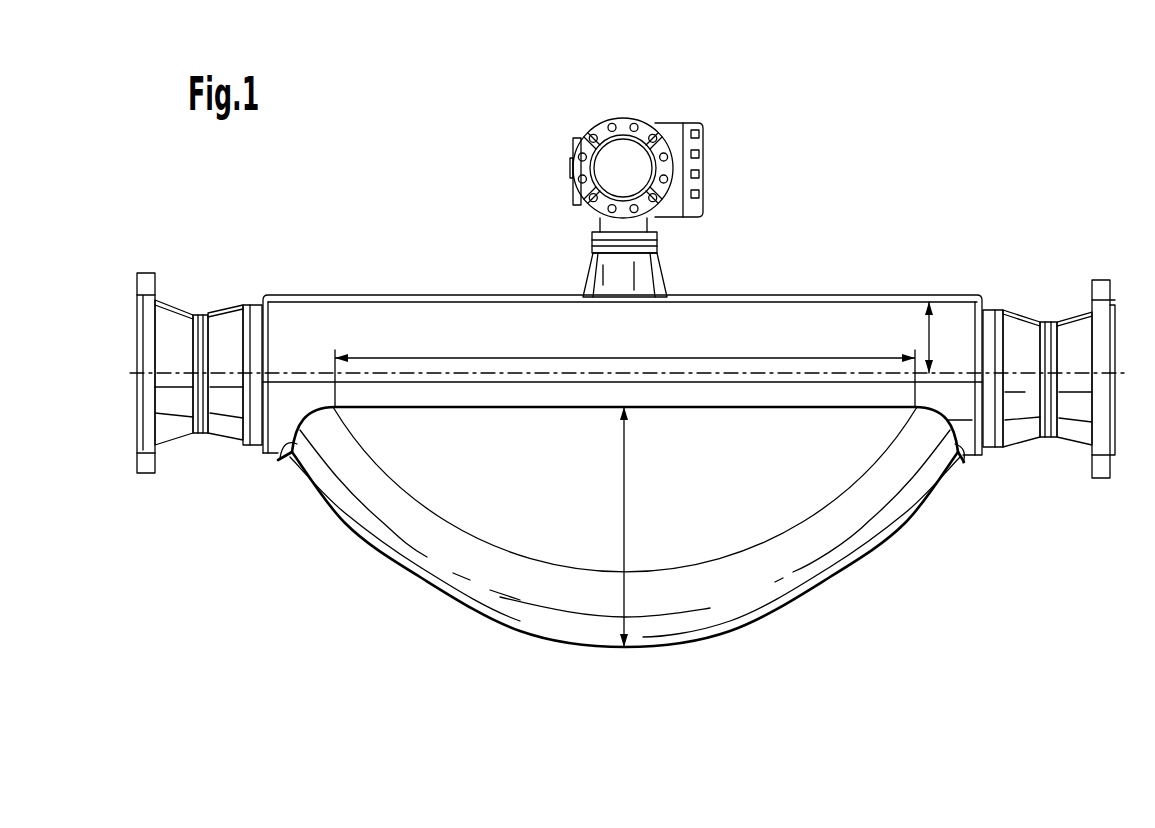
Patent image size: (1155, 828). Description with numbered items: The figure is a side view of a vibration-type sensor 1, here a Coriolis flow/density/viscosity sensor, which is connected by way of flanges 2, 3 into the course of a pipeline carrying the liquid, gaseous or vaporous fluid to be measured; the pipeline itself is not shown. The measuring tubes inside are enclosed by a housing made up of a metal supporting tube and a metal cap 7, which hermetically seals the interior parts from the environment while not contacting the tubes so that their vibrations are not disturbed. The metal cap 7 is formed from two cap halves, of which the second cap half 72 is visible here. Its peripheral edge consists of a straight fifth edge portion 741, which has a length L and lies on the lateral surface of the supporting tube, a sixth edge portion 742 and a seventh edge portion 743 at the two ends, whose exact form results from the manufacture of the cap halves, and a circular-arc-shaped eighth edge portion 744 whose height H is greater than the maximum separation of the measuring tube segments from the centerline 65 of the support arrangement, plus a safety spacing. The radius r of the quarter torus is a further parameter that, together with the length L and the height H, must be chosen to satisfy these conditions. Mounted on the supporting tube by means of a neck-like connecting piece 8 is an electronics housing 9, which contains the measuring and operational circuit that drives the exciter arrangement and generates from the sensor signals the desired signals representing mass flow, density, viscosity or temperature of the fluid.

The vibration-type sensor 1 is at (840, 205).
The flange 2 is at (151, 271).
The flange 3 is at (1101, 278).
The centerline of the support arrangement 65 is at (300, 372).
The metal cap 7 is at (352, 601).
The second cap half 72 is at (457, 597).
The fifth edge portion 741 is at (722, 412).
The sixth edge portion 742 is at (958, 455).
The seventh edge portion 743 is at (290, 463).
The eighth edge portion 744 is at (833, 592).
The neck-like connecting piece 8 is at (665, 279).
The electronics housing 9 is at (668, 125).
The length of the edge portions L is at (625, 363).
The height of the circular arc H is at (622, 518).
The radius of the quarter torus r is at (929, 337).